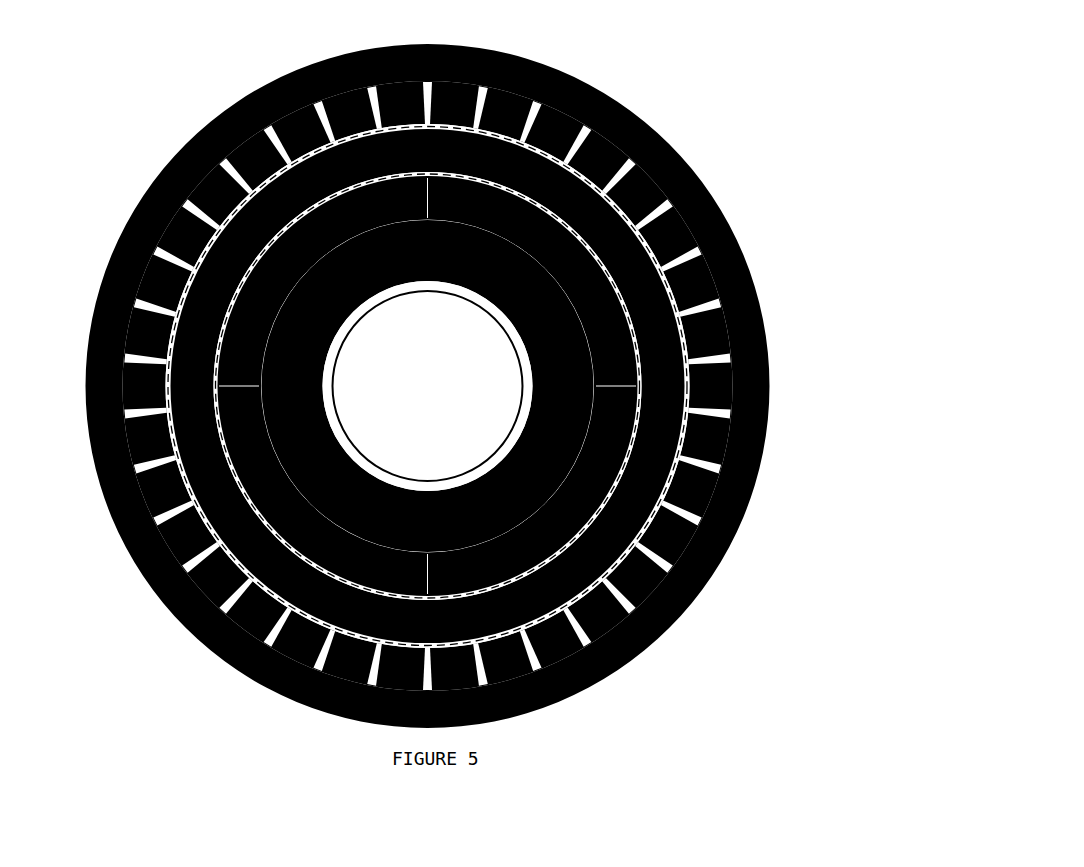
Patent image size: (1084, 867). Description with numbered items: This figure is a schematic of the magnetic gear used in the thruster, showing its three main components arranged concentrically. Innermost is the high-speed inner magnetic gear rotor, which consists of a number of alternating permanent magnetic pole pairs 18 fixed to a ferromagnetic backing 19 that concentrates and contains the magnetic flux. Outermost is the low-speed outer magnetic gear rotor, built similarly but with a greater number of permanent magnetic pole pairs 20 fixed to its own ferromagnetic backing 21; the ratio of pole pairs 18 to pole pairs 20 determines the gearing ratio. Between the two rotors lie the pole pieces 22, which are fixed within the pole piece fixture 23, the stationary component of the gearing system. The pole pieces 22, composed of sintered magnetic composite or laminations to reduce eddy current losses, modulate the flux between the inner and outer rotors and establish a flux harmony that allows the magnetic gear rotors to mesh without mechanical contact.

The permanent magnetic pole pairs 18 is at (373, 187).
The ferromagnetic backing 19 is at (460, 500).
The permanent magnetic pole pairs 20 is at (655, 237).
The ferromagnetic backing 21 is at (605, 110).
The pole pieces 22 is at (676, 310).
The pole piece fixture 23 is at (677, 340).